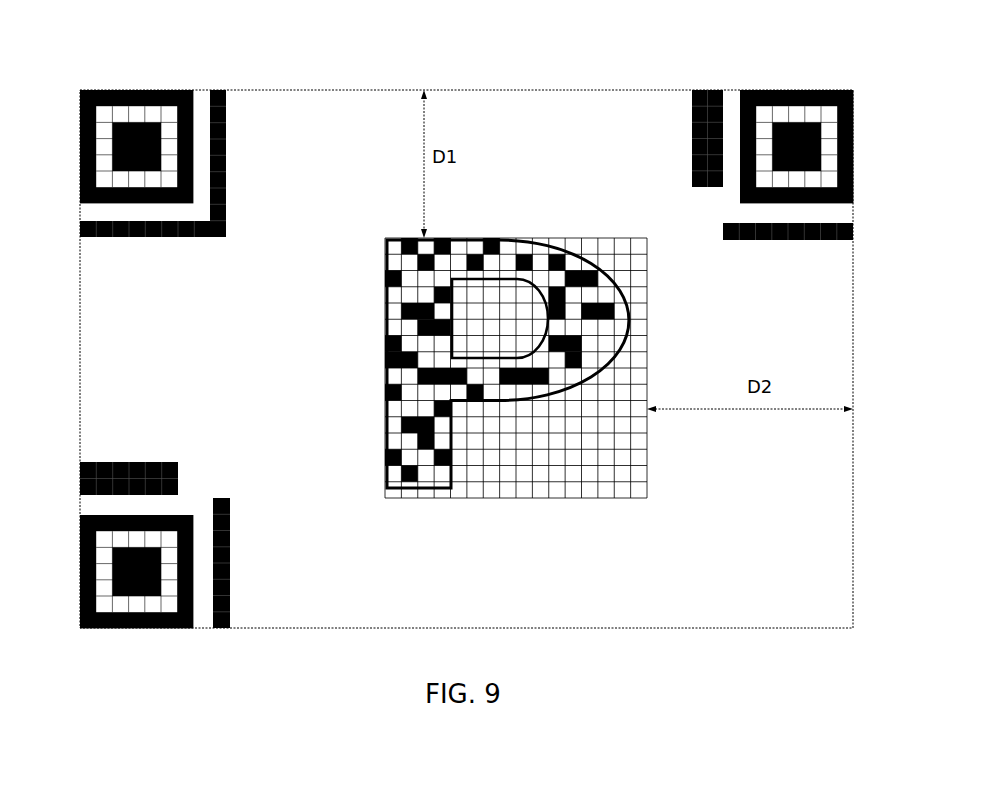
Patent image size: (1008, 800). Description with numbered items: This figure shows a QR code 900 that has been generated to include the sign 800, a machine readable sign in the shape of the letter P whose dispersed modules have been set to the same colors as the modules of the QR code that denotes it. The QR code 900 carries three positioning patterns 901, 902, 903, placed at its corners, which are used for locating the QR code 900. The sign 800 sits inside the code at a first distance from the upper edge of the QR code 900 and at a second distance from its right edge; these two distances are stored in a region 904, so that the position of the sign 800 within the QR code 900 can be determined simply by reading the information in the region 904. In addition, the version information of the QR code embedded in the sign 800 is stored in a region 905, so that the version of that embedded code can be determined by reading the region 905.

The sign 800 is at (537, 498).
The QR code 900 is at (598, 90).
The positioning pattern 901 is at (768, 90).
The positioning pattern 902 is at (155, 90).
The positioning pattern 903 is at (167, 515).
The region 904 is at (755, 240).
The region 905 is at (692, 128).